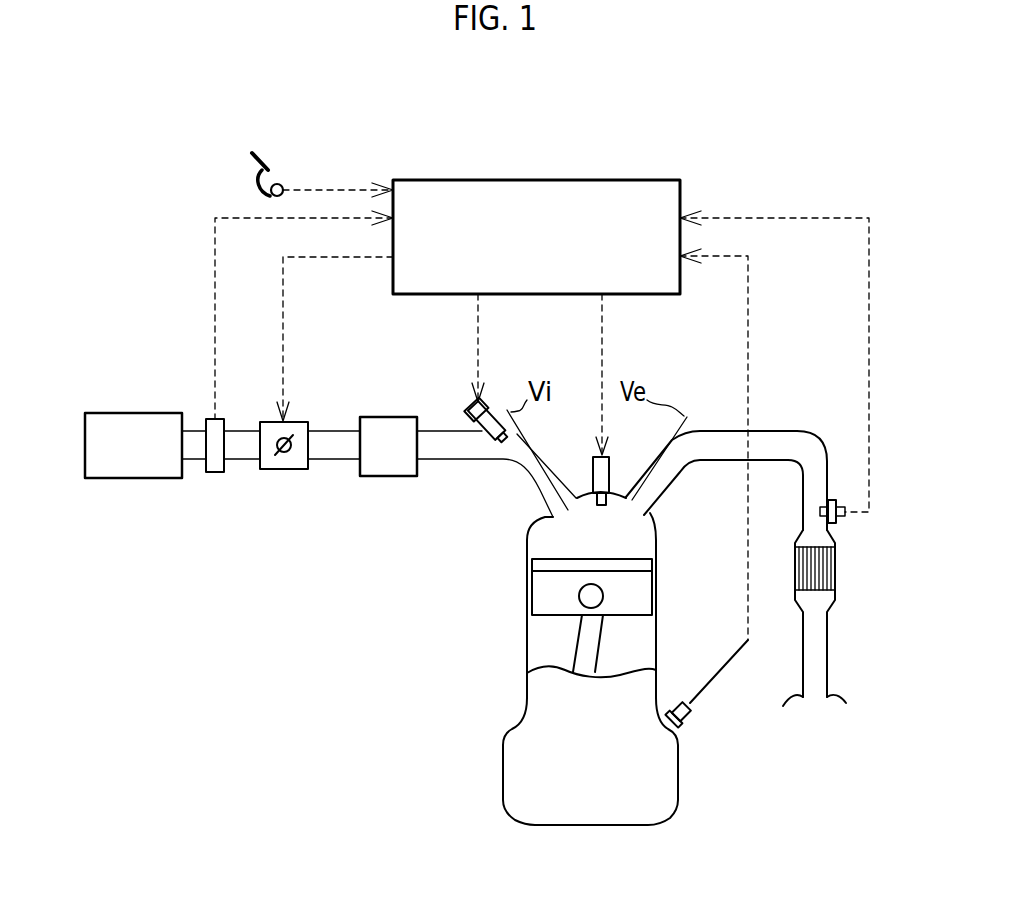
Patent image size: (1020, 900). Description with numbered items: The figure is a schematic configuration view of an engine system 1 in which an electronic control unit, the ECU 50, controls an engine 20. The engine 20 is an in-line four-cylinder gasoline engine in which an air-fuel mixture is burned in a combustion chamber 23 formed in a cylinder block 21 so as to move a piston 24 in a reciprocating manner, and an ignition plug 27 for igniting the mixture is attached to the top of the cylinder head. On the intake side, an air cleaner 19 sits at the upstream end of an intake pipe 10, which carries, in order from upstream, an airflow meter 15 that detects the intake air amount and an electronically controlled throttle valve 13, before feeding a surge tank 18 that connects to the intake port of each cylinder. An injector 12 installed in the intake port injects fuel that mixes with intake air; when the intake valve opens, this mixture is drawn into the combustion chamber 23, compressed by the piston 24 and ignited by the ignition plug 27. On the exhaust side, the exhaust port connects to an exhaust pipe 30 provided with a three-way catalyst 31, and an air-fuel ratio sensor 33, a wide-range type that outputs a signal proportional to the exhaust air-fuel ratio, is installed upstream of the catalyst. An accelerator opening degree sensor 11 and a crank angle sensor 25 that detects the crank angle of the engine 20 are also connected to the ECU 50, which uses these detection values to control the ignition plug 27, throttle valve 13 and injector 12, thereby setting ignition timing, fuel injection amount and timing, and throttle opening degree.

The engine system 1 is at (877, 179).
The intake pipe 10 is at (328, 430).
The accelerator opening degree sensor 11 is at (279, 186).
The injector 12 is at (474, 414).
The throttle valve 13 is at (291, 470).
The airflow meter 15 is at (215, 472).
The surge tank 18 is at (385, 416).
The air cleaner 19 is at (135, 412).
The engine 20 is at (564, 658).
The cylinder block 21 is at (522, 737).
The combustion chamber 23 is at (625, 541).
The piston 24 is at (652, 590).
The crank angle sensor 25 is at (690, 717).
The ignition plug 27 is at (611, 465).
The exhaust pipe 30 is at (771, 431).
The three-way catalyst 31 is at (836, 569).
The air-fuel ratio sensor 33 is at (833, 500).
The ECU 50 is at (681, 189).